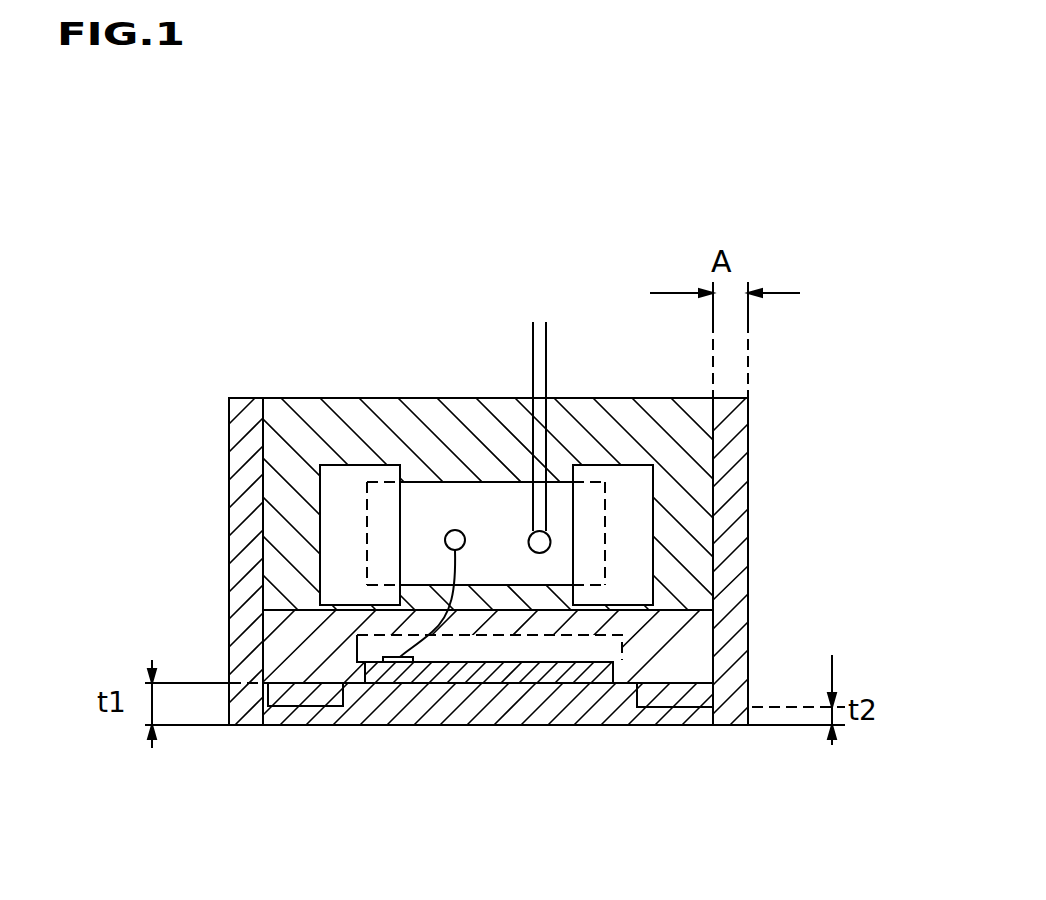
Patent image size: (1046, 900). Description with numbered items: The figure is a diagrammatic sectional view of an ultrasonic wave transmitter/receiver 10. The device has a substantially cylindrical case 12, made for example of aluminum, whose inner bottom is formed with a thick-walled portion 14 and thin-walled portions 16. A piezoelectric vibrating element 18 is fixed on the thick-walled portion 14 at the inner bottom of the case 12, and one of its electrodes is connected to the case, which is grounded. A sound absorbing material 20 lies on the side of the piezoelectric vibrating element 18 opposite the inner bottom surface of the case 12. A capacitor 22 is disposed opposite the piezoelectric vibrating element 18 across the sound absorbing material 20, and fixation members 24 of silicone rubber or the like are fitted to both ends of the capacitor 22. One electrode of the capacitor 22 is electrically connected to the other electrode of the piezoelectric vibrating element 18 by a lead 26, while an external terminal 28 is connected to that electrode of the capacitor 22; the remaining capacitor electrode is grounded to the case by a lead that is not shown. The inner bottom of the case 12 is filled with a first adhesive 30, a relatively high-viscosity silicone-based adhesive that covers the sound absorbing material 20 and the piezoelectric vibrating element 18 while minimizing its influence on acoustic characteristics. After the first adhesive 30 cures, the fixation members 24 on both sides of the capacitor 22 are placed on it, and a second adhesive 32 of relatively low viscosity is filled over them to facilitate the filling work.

The ultrasonic wave transmitter/receiver 10 is at (232, 168).
The case 12 is at (748, 433).
The thick-walled portion 14 is at (503, 725).
The thin-walled portions 16 is at (297, 725).
The piezoelectric vibrating element 18 is at (441, 673).
The sound absorbing material 20 is at (360, 633).
The capacitor 22 is at (430, 502).
The fixation members 24 is at (340, 533).
The lead 26 is at (413, 617).
The external terminal 28 is at (546, 355).
The first adhesive 30 is at (703, 725).
The second adhesive 32 is at (268, 487).